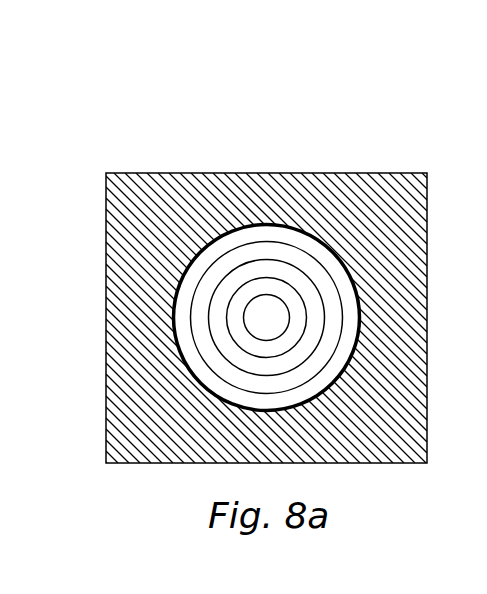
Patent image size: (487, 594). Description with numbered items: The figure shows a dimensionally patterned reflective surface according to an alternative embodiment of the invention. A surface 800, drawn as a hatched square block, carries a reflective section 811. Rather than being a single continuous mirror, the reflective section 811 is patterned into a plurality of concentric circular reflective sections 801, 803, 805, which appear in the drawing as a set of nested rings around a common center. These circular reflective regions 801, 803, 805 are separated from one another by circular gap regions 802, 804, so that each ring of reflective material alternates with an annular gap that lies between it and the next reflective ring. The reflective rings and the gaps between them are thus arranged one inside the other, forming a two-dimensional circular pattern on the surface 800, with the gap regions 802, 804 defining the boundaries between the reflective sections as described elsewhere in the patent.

The surface 800 is at (136, 80).
The circular reflective section 801 is at (240, 303).
The circular gap region 802 is at (288, 286).
The circular reflective section 803 is at (215, 323).
The circular gap region 804 is at (325, 310).
The circular reflective section 805 is at (213, 362).
The reflective section 811 is at (243, 207).